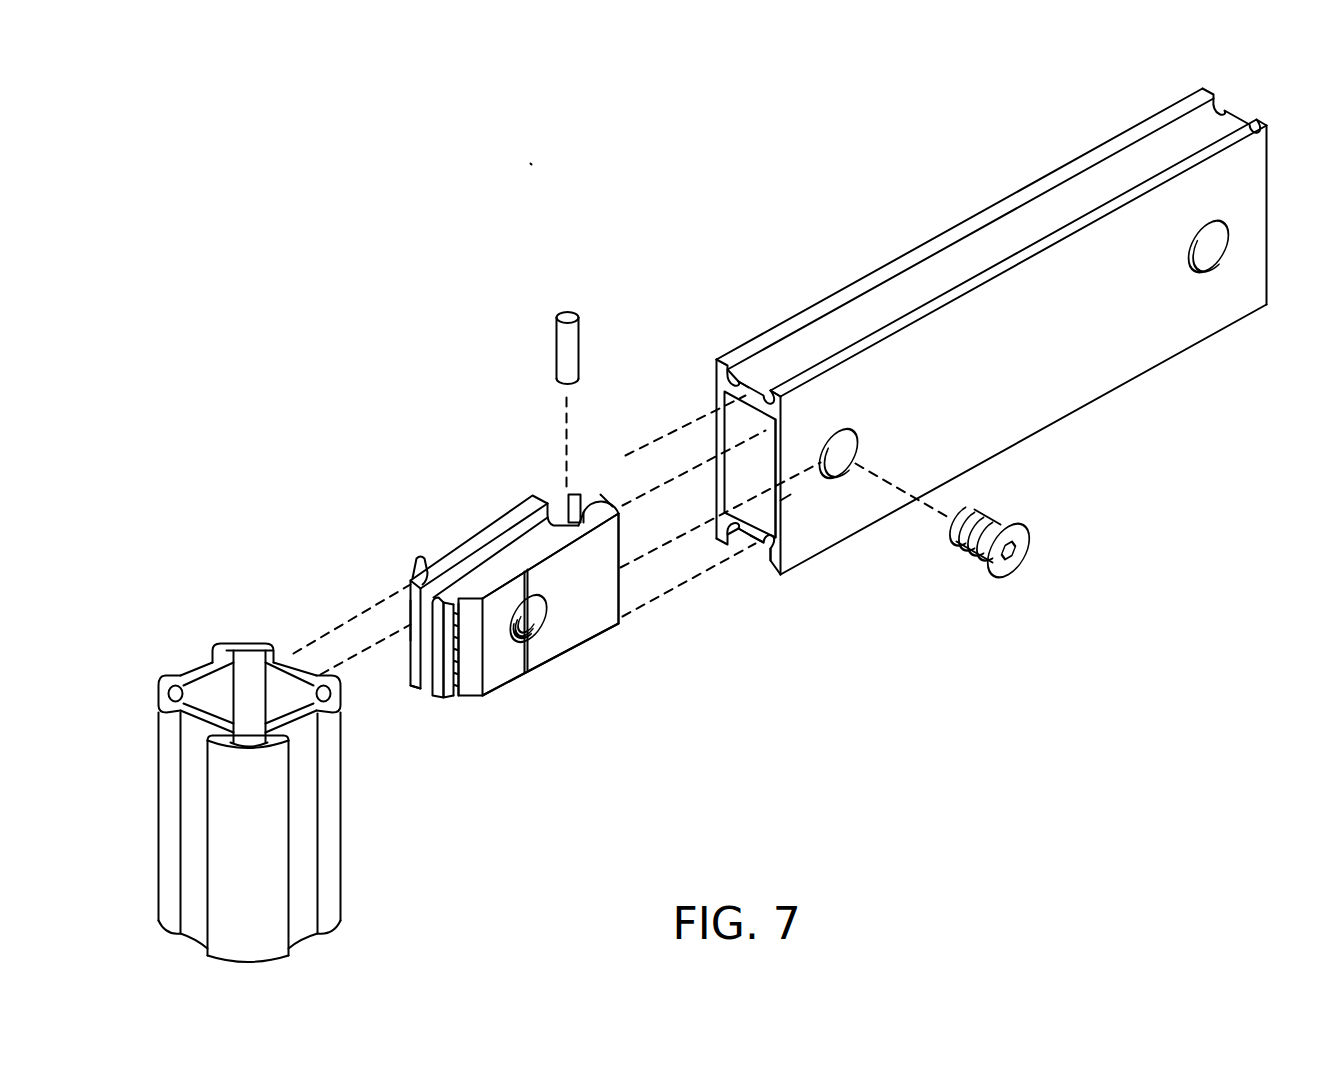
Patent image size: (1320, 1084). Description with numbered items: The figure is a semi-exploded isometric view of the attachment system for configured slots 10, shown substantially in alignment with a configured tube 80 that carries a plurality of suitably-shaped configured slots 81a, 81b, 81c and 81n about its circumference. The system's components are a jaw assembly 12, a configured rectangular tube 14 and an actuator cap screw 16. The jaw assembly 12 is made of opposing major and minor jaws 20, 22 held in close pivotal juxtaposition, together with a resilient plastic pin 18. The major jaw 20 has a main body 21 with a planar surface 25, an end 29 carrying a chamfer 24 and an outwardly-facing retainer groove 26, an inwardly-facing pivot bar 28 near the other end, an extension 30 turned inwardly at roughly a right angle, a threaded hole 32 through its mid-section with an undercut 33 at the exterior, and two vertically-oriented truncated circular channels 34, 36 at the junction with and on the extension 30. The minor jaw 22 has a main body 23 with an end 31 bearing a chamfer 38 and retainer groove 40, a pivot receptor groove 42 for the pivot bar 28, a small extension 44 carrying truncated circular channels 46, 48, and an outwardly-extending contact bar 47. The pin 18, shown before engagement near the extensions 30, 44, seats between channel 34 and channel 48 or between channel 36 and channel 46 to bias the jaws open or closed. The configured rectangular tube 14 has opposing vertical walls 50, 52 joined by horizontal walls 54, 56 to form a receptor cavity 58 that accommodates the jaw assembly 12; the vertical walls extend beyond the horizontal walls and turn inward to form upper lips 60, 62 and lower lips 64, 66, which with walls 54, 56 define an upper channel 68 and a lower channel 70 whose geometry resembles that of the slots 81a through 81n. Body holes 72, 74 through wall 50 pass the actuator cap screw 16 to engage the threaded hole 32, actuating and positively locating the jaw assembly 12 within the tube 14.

The attachment system for configured slots 10 is at (530, 163).
The jaw assembly 12 is at (492, 515).
The configured rectangular tube 14 is at (975, 200).
The actuator cap screw 16 is at (1020, 523).
The resilient plastic pin 18 is at (556, 340).
The major jaw 20 is at (602, 637).
The main body 21 is at (593, 608).
The minor jaw 22 is at (465, 523).
The main body 23 is at (465, 545).
The chamfer 24 is at (450, 683).
The planar surface 25 is at (567, 628).
The retainer groove 26 is at (467, 662).
The pivot bar 28 is at (553, 535).
The end 29 is at (437, 668).
The extension 30 is at (613, 497).
The end 31 is at (417, 660).
The threaded hole 32 is at (537, 623).
The undercut 33 is at (517, 637).
The truncated circular channel 34 is at (595, 512).
The truncated circular channel 36 is at (573, 493).
The chamfer 38 is at (410, 590).
The retainer groove 40 is at (418, 560).
The pivot receptor groove 42 is at (527, 508).
The small extension 44 is at (553, 507).
The truncated circular channel 46 is at (568, 498).
The contact bar 47 is at (538, 510).
The truncated circular channel 48 is at (598, 487).
The vertically-oriented wall 50 is at (778, 473).
The vertically-oriented wall 52 is at (790, 487).
The horizontally-oriented wall 54 is at (762, 450).
The horizontally-oriented wall 56 is at (758, 535).
The receptor cavity 58 is at (758, 440).
The upper inwardly-directed lip 60 is at (830, 303).
The upper inwardly-directed lip 62 is at (885, 313).
The lower inwardly-directed lip 64 is at (730, 542).
The lower inwardly-directed lip 66 is at (767, 563).
The upper channel 68 is at (925, 272).
The lower channel 70 is at (748, 543).
The body hole 72 is at (840, 430).
The body hole 74 is at (1222, 240).
The configured tube 80 is at (355, 846).
The configured slot 81a is at (300, 660).
The configured slot 81b is at (193, 672).
The configured slot 81c is at (190, 822).
The configured slot 81n is at (305, 818).